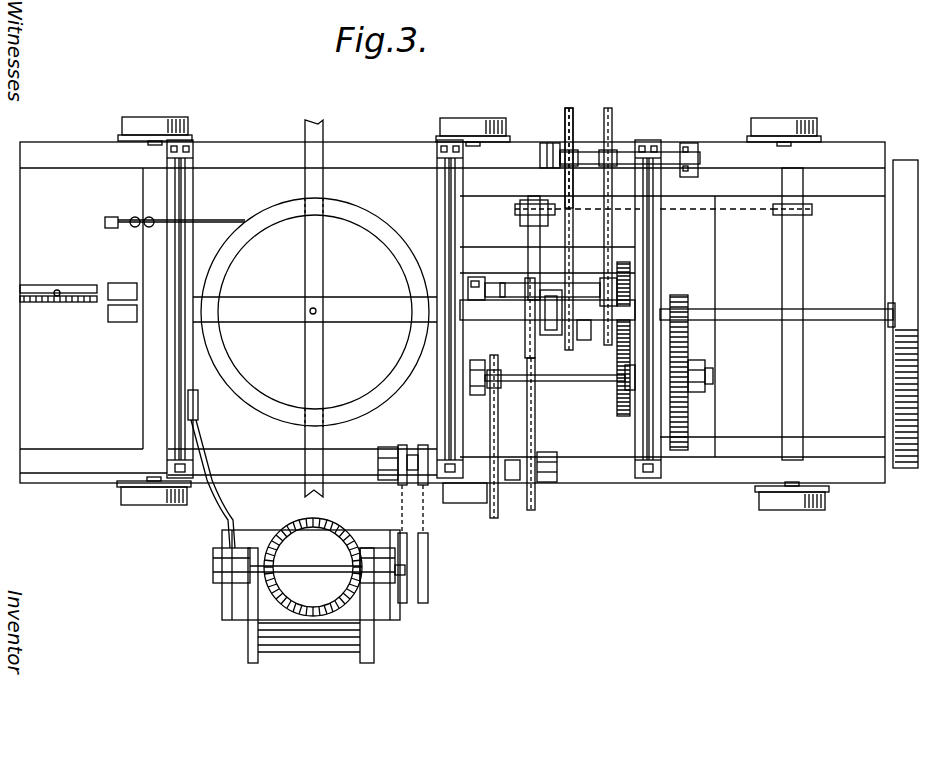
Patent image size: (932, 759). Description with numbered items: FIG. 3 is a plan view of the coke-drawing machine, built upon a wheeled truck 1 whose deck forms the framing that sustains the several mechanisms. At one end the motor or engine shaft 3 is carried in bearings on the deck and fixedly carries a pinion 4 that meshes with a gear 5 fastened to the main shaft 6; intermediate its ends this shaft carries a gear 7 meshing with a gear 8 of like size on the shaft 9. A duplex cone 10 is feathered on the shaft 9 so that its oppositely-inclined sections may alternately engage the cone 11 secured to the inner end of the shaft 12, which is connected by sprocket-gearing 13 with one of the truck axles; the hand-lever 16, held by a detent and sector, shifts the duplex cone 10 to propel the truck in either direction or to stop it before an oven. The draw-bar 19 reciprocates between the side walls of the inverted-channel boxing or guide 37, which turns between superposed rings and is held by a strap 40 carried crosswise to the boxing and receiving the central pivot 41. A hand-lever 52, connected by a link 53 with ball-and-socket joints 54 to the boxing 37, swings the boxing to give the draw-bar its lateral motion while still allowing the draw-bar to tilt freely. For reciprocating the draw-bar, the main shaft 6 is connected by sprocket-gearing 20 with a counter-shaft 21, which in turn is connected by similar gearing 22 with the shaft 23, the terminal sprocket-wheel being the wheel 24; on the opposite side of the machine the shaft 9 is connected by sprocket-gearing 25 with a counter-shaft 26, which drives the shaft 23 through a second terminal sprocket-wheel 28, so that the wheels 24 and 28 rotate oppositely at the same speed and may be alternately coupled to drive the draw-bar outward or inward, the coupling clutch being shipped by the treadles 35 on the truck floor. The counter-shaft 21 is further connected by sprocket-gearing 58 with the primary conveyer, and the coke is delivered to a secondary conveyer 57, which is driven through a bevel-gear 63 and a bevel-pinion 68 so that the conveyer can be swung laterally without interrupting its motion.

The wheeled truck 1 is at (72, 203).
The motor-shaft 3 is at (849, 300).
The pinion 4 is at (690, 328).
The gear 5 is at (690, 400).
The main shaft 6 is at (592, 382).
The gear 7 is at (616, 415).
The gear 8 is at (630, 272).
The shaft 9 is at (598, 284).
The duplex cone 10 is at (492, 282).
The cone 11 is at (515, 283).
The shaft 12 is at (528, 231).
The sprocket-gearing 13 is at (773, 210).
The hand-lever 16 is at (57, 290).
The draw-bar 19 is at (323, 442).
The sprocket-gearing 20 is at (494, 395).
The counter-shaft 21 is at (515, 470).
The sprocket-gearing 22 is at (544, 434).
The shaft 23 is at (590, 320).
The terminal sprocket-wheel 24 is at (569, 212).
The sprocket-gearing 25 is at (609, 210).
The counter-shaft 26 is at (640, 155).
The terminal sprocket-wheel 28 is at (547, 324).
The treadles 35 is at (124, 300).
The boxing or guide 37 is at (318, 368).
The strap 40 is at (315, 311).
The pivot 41 is at (310, 313).
The hand-lever 52 is at (132, 226).
The link 53 is at (210, 222).
The ball-and-socket joints 54 is at (147, 217).
The secondary conveyer 57 is at (309, 603).
The sprocket-gearing 58 is at (402, 520).
The bevel-gear 63 is at (313, 567).
The bevel-pinion 68 is at (258, 548).